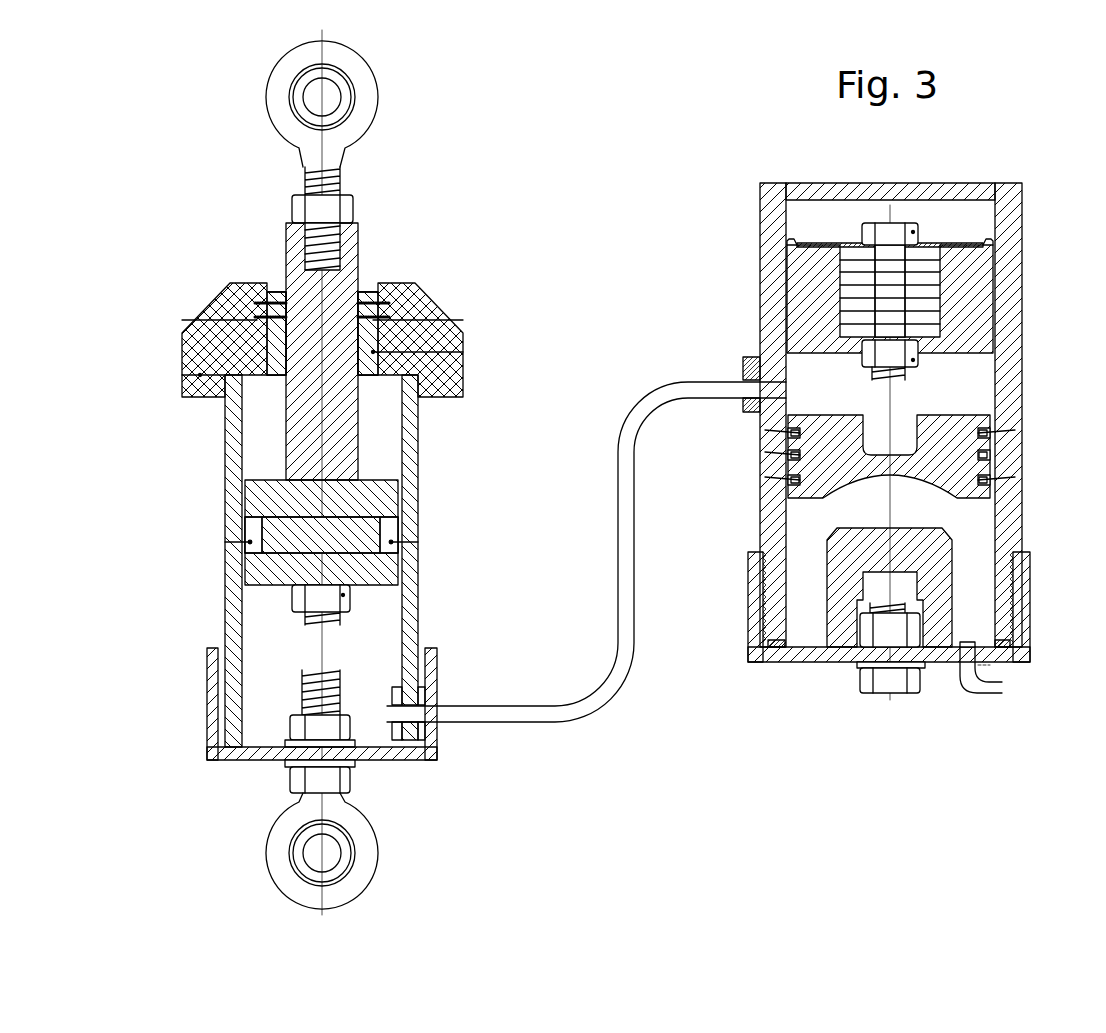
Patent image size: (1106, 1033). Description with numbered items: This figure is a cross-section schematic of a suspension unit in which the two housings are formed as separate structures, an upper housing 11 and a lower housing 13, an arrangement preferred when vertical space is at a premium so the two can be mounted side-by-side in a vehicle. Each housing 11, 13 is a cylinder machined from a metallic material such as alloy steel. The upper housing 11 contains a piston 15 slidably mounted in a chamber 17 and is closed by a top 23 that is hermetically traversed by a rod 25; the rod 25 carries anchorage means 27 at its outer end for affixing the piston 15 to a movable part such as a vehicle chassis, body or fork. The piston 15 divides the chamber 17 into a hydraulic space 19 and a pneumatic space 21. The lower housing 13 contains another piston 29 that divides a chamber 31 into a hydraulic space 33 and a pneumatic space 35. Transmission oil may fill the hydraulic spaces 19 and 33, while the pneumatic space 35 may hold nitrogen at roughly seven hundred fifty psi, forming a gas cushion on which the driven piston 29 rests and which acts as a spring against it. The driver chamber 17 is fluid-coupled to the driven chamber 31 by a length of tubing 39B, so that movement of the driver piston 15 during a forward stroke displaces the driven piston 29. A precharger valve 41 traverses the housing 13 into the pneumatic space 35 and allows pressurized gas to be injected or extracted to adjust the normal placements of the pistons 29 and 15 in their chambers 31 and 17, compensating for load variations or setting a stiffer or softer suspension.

The upper housing 11 is at (235, 573).
The lower housing 13 is at (805, 290).
The piston 15 is at (360, 528).
The chamber 17 is at (385, 441).
The hydraulic space 19 is at (258, 630).
The pneumatic space 21 is at (258, 430).
The top 23 is at (463, 333).
The rod 25 is at (356, 270).
The anchorage means 27 is at (375, 105).
The piston 29 is at (978, 455).
The chamber 31 is at (965, 608).
The hydraulic space 33 is at (935, 393).
The pneumatic space 35 is at (807, 530).
The tubing 39B is at (625, 582).
The precharger valve 41 is at (985, 698).